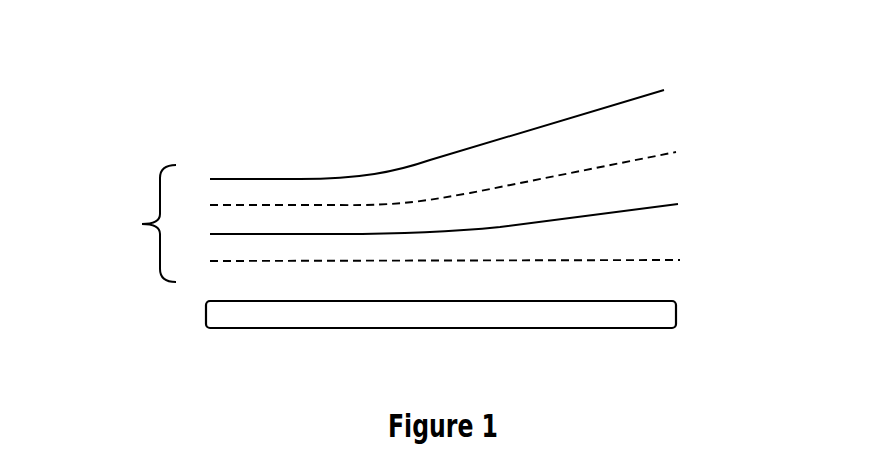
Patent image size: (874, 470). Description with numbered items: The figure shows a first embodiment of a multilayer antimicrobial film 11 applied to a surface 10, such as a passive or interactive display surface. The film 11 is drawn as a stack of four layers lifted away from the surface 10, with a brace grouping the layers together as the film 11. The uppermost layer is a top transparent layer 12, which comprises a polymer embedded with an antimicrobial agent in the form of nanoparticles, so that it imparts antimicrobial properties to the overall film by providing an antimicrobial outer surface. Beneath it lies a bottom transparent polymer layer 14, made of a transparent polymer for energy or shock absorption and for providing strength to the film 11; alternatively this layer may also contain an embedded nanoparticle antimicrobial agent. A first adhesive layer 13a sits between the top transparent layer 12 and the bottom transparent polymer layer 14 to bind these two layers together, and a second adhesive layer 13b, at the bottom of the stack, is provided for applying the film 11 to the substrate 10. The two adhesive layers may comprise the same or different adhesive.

The surface 10 is at (647, 313).
The multilayer antimicrobial film 11 is at (130, 221).
The top transparent layer 12 is at (693, 83).
The first adhesive layer 13a is at (693, 152).
The bottom transparent polymer layer 14 is at (693, 205).
The second adhesive layer 13b is at (693, 260).